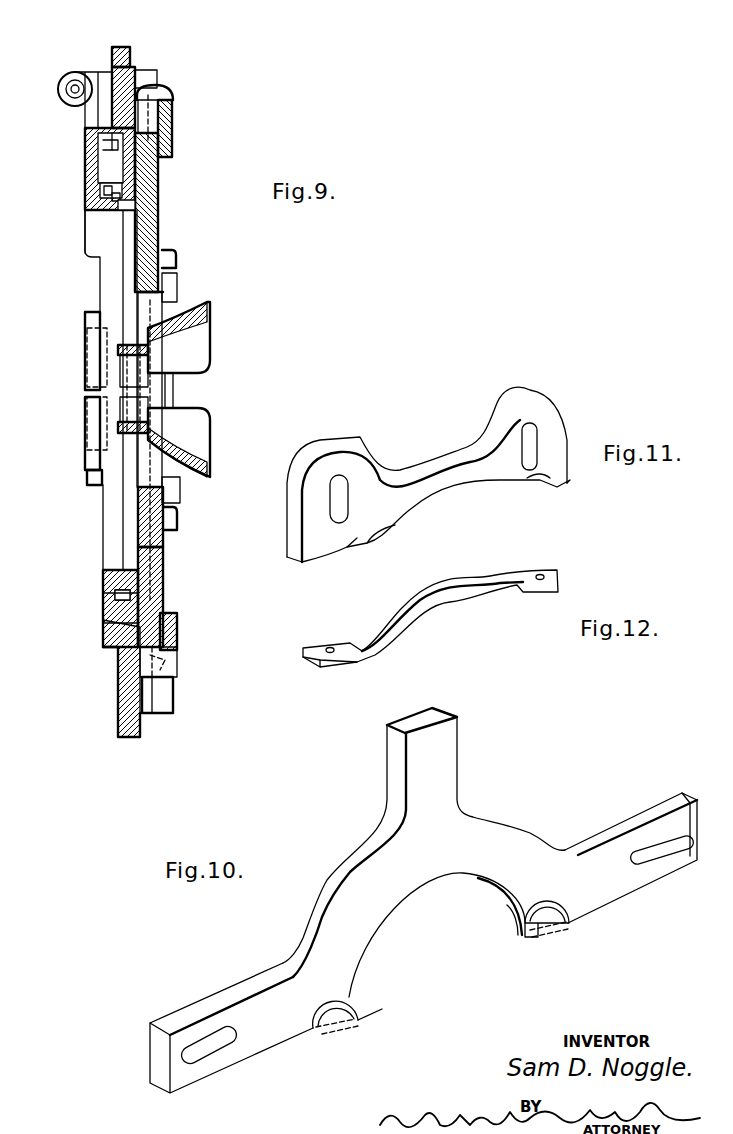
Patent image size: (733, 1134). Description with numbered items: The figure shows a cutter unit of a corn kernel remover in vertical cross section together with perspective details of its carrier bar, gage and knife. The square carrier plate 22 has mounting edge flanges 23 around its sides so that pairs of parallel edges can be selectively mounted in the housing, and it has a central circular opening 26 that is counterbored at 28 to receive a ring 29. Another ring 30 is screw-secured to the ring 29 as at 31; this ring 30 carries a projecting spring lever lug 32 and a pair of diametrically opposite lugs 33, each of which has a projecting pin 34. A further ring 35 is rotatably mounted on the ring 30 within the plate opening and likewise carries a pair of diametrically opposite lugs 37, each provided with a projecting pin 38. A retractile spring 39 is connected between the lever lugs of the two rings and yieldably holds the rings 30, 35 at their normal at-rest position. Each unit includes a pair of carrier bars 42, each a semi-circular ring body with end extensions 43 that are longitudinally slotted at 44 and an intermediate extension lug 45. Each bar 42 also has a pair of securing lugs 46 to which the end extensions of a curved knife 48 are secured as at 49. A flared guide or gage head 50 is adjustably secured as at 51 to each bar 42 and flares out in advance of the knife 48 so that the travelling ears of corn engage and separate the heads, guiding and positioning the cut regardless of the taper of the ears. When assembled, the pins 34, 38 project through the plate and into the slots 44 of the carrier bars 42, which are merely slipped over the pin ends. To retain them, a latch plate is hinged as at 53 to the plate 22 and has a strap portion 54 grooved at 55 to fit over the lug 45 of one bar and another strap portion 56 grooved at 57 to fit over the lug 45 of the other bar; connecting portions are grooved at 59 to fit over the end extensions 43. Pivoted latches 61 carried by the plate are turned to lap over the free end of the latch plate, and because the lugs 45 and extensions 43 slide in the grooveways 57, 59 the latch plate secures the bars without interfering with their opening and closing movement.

In FIG. 9, the carrier plate 22 is at (133, 67).
In FIG. 9, the edge flanges 23 is at (130, 47).
In FIG. 9, the central circular opening 26 is at (110, 157).
In FIG. 9, the counterbore 28 is at (120, 145).
In FIG. 9, the ring 29 is at (133, 173).
In FIG. 9, the ring 30 is at (102, 210).
In FIG. 9, the screw securing 31 is at (103, 200).
In FIG. 9, the spring lever lug 32 is at (113, 180).
In FIG. 9, the lugs or extensions 33 is at (90, 475).
In FIG. 9, the projecting pin 34 is at (117, 422).
In FIG. 9, the ring 35 is at (160, 190).
In FIG. 9, the lugs or projections 37 is at (92, 373).
In FIG. 9, the projecting pin 38 is at (117, 363).
In FIG. 9, the retractile spring 39 is at (68, 80).
In FIG. 9, the carrier bar 42 is at (177, 273).
In FIG. 10, the carrier bar 42 is at (310, 917).
In FIG. 10, the end extensions 43 is at (218, 995).
In FIG. 10, the longitudinal slots 44 is at (213, 1050).
In FIG. 9, the intermediate extension lug 45 is at (153, 167).
In FIG. 10, the intermediate extension lug 45 is at (440, 758).
In FIG. 10, the securing lugs 46 is at (340, 1025).
In FIG. 9, the curved knife 48 is at (143, 375).
In FIG. 12, the curved knife 48 is at (442, 570).
In FIG. 12, the securing means 49 is at (329, 634).
In FIG. 9, the flared guide or gage head 50 is at (200, 333).
In FIG. 11, the flared guide or gage head 50 is at (450, 470).
In FIG. 9, the adjustable securing means 51 is at (177, 300).
In FIG. 11, the adjustable securing means 51 is at (346, 464).
In FIG. 9, the hinge 53 is at (163, 88).
In FIG. 9, the strap portion 54 is at (153, 100).
In FIG. 9, the groove 55 is at (172, 130).
In FIG. 9, the strap portion 56 is at (177, 673).
In FIG. 9, the groove 57 is at (177, 653).
In FIG. 9, the groove 59 is at (173, 257).
In FIG. 9, the pivoted latches 61 is at (163, 692).